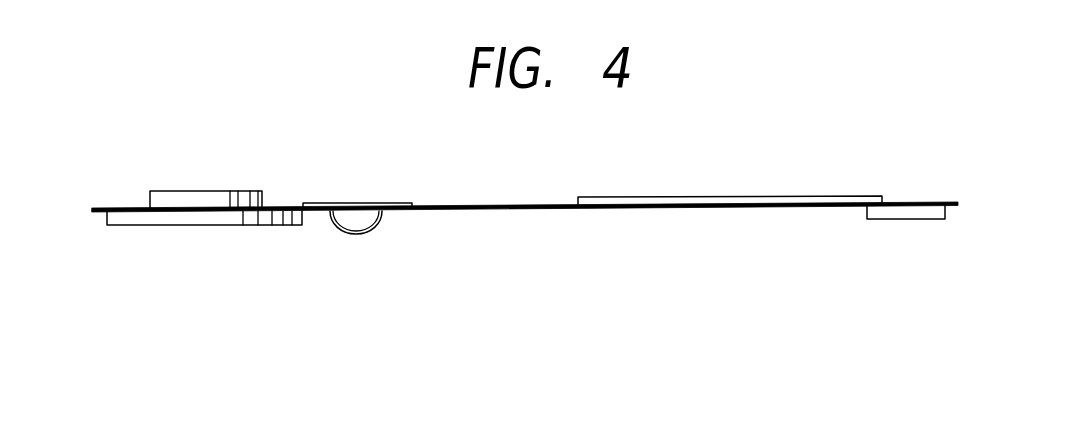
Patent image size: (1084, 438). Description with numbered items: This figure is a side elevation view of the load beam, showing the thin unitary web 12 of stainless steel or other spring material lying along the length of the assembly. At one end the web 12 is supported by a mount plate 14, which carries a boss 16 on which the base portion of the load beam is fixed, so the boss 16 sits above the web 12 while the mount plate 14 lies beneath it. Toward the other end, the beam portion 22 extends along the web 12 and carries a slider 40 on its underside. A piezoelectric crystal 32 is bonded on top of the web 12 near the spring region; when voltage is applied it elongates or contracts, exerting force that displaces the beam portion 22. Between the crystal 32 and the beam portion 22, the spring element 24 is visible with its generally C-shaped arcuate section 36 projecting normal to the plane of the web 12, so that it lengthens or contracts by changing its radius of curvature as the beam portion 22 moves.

The unitary web 12 is at (522, 210).
The mount plate 14 is at (180, 225).
The boss 16 is at (198, 191).
The beam portion 22 is at (745, 197).
The left hand spring element 24 is at (333, 224).
The piezoelectric crystal 32 is at (372, 203).
The arcuate section 36 is at (370, 232).
The slider 40 is at (903, 219).